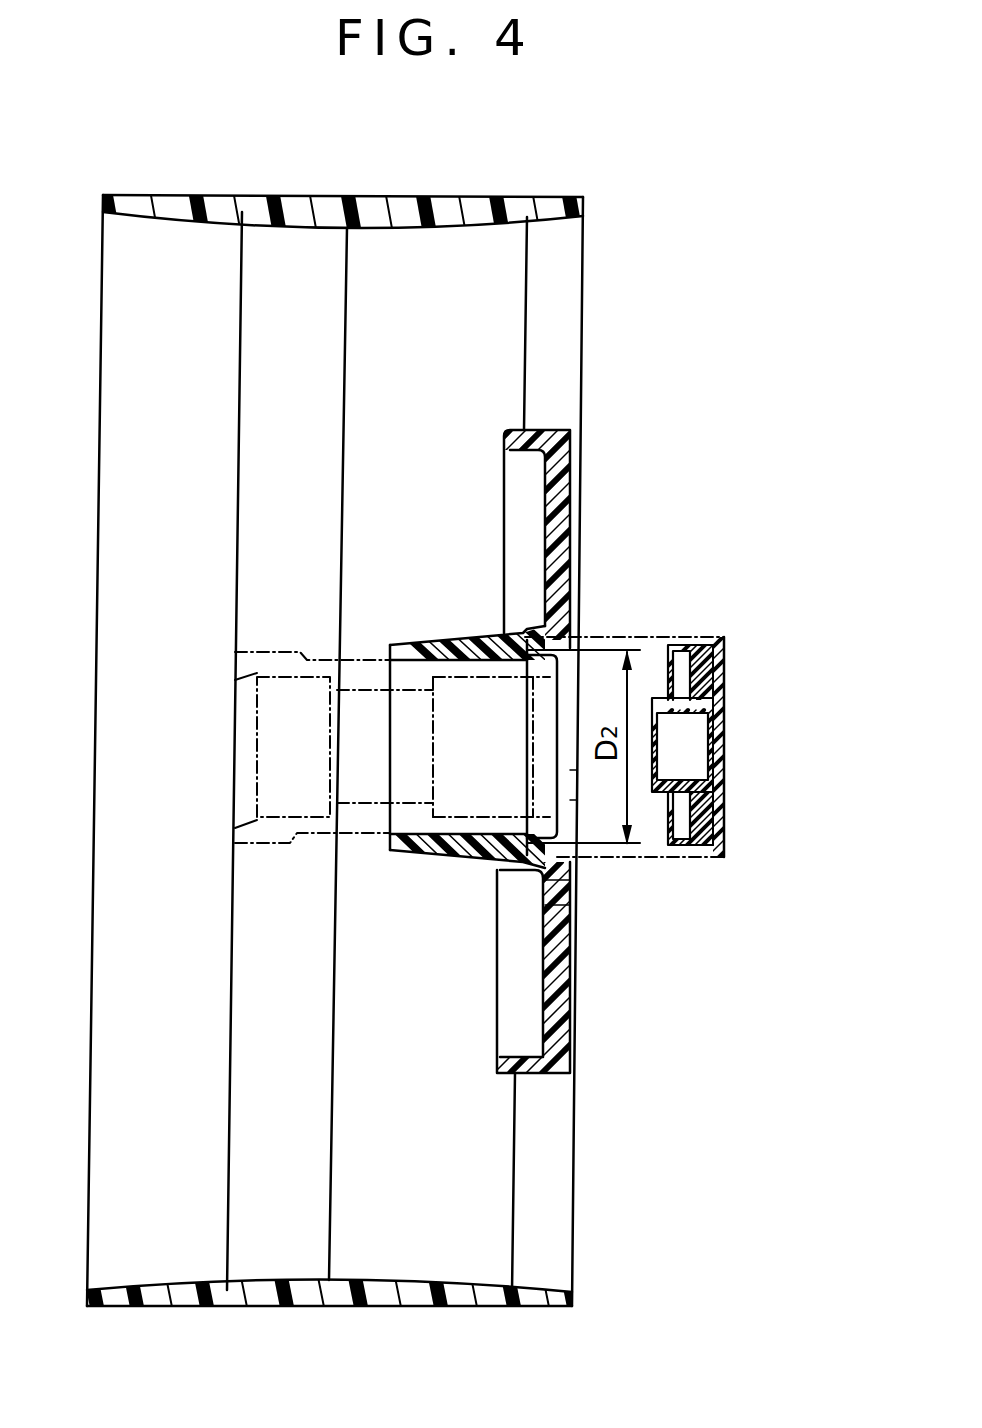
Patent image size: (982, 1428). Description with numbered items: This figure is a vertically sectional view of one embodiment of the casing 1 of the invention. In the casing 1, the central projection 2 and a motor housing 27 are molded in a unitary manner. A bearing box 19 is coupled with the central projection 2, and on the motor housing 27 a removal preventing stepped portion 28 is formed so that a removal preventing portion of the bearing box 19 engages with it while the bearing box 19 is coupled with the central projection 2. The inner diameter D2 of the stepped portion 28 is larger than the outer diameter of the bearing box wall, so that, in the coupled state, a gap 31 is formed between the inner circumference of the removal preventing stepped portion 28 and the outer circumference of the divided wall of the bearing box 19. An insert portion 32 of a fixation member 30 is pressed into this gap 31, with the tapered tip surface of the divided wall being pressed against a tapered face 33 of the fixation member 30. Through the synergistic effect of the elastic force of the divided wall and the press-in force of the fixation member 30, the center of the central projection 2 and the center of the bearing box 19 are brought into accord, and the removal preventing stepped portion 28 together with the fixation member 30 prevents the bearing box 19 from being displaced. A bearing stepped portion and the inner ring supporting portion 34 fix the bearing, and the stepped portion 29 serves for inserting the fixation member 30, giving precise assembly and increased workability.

The casing 1 is at (542, 1228).
The central projection 2 is at (443, 858).
The bearing box 19 is at (287, 843).
The motor housing 27 is at (570, 1060).
The removal preventing stepped portion 28 is at (530, 707).
The stepped portion for inserting of the fixation member 29 is at (575, 785).
The fixation member 30 is at (726, 740).
The gap 31 is at (568, 892).
The insert portion 32 is at (675, 682).
The tapered face 33 is at (697, 813).
The inner ring supporting portion 34 is at (675, 743).